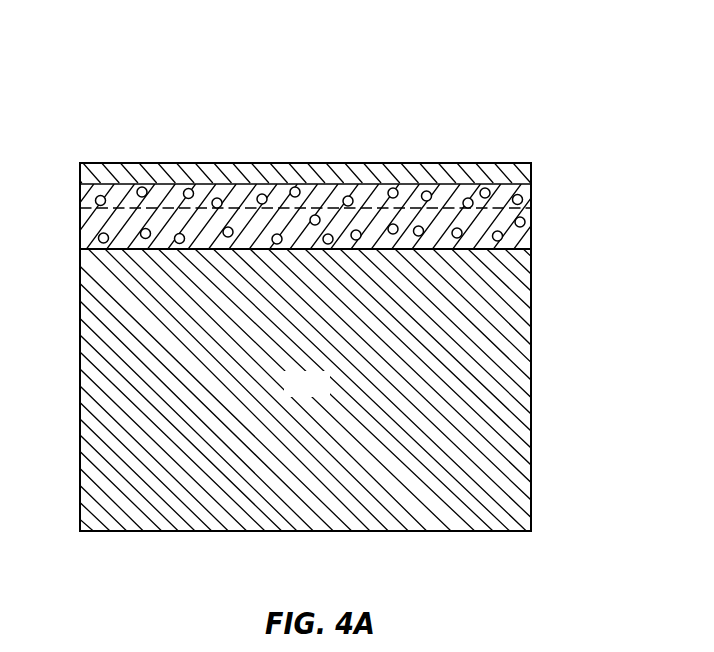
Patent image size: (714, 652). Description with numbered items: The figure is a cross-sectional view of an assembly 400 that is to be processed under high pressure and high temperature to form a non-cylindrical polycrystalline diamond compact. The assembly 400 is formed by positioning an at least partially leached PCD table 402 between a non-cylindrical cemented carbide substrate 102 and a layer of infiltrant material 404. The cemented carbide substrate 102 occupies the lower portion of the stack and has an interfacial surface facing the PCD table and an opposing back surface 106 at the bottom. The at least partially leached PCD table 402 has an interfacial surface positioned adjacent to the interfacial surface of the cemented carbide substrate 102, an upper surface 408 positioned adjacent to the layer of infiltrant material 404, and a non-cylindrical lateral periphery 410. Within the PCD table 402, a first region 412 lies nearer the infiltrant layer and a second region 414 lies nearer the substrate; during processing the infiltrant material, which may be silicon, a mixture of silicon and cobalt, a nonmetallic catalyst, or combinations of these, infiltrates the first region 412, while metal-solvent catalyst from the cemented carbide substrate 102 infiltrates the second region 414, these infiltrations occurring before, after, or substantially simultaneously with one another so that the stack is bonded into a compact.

The assembly 400 is at (527, 100).
The at least partially leached PCD table 402 is at (552, 195).
The layer of infiltrant material 404 is at (533, 172).
The upper surface 408 is at (340, 183).
The non-cylindrical lateral periphery 410 is at (533, 226).
The first region 412 is at (73, 183).
The second region 414 is at (73, 210).
The cemented carbide substrate 102 is at (324, 393).
The back surface 106 is at (392, 532).